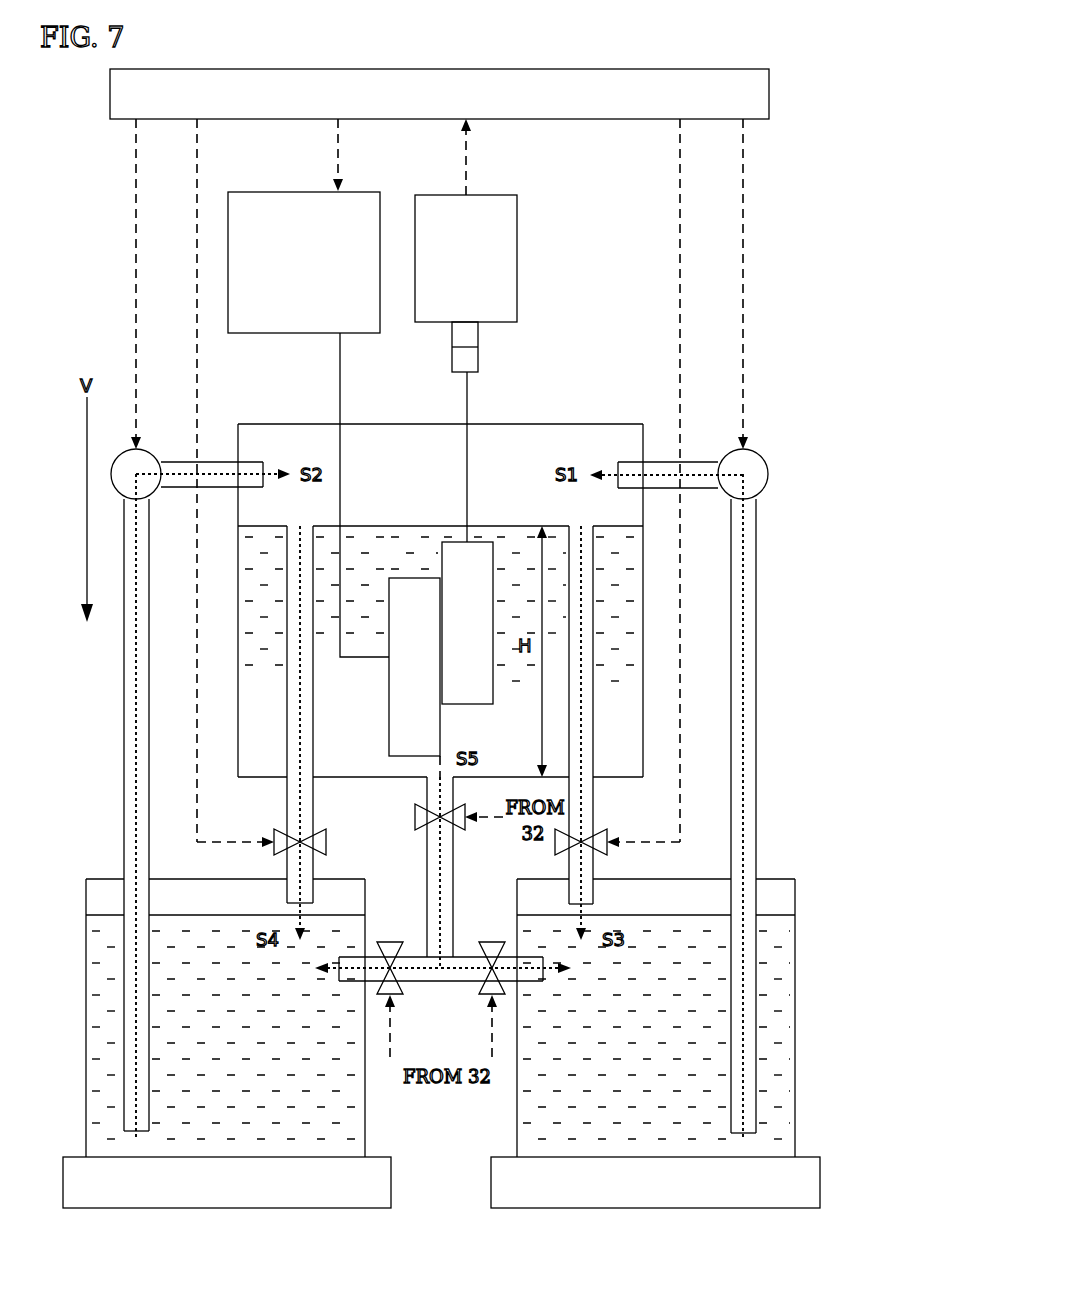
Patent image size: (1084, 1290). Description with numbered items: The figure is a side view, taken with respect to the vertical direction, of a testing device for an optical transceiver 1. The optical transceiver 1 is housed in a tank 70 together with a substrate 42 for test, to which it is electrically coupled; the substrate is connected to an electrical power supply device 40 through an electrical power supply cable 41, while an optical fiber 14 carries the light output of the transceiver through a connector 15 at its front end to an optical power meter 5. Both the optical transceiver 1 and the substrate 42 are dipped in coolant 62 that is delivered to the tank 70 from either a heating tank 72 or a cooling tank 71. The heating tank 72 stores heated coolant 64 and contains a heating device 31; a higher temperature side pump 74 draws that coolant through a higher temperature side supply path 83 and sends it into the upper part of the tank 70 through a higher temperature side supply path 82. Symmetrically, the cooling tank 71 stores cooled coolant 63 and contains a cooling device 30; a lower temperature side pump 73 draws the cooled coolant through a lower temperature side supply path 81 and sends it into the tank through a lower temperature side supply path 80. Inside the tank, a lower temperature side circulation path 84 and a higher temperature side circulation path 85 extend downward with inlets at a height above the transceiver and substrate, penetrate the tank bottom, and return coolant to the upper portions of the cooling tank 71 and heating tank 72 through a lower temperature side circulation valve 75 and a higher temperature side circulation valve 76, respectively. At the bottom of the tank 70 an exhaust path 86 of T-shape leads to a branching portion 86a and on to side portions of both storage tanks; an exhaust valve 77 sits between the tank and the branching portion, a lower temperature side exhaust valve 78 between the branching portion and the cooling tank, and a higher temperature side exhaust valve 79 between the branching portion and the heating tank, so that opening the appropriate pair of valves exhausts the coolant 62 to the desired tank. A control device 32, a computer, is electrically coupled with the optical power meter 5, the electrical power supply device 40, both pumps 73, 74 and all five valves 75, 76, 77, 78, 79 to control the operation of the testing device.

The control device 32 is at (745, 69).
The electrical power supply device 40 is at (380, 204).
The optical power meter 5 is at (517, 206).
The connector 15 is at (478, 362).
The optical fiber 14 is at (467, 405).
The electrical power supply cable 41 is at (340, 368).
The tank 70 is at (643, 446).
The coolant 62 is at (440, 641).
The substrate for test 42 is at (440, 741).
The optical transceiver 1 is at (493, 562).
The lower temperature side pump 73 is at (158, 456).
The higher temperature side pump 74 is at (766, 458).
The lower temperature side supply path 80 is at (205, 462).
The higher temperature side supply path 82 is at (706, 462).
The lower temperature side supply path 81 is at (149, 652).
The higher temperature side supply path 83 is at (756, 652).
The lower temperature side circulation path 84 is at (286, 534).
The higher temperature side circulation path 85 is at (594, 534).
The exhaust path 86 is at (453, 862).
The branching portion 86a is at (443, 986).
The lower temperature side circulation valve 75 is at (326, 836).
The higher temperature side circulation valve 76 is at (607, 836).
The exhaust valve 77 is at (466, 813).
The lower temperature side exhaust valve 78 is at (386, 941).
The higher temperature side exhaust valve 79 is at (487, 941).
The cooling tank 71 is at (365, 888).
The heating tank 72 is at (795, 888).
The cooled coolant 63 is at (225, 1027).
The heated coolant 64 is at (656, 1027).
The cooling device 30 is at (368, 1156).
The heating device 31 is at (803, 1156).